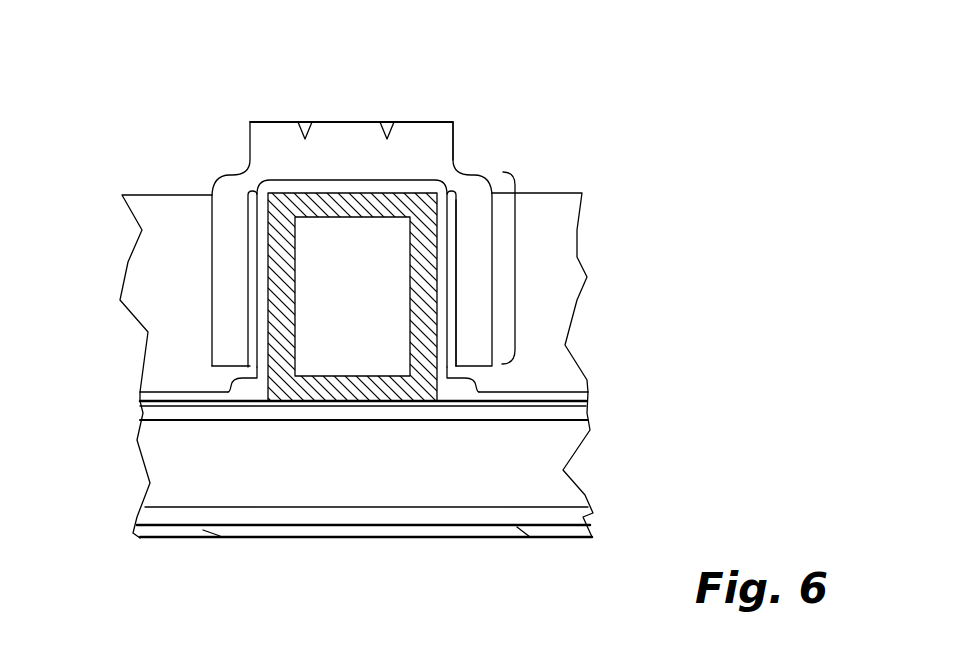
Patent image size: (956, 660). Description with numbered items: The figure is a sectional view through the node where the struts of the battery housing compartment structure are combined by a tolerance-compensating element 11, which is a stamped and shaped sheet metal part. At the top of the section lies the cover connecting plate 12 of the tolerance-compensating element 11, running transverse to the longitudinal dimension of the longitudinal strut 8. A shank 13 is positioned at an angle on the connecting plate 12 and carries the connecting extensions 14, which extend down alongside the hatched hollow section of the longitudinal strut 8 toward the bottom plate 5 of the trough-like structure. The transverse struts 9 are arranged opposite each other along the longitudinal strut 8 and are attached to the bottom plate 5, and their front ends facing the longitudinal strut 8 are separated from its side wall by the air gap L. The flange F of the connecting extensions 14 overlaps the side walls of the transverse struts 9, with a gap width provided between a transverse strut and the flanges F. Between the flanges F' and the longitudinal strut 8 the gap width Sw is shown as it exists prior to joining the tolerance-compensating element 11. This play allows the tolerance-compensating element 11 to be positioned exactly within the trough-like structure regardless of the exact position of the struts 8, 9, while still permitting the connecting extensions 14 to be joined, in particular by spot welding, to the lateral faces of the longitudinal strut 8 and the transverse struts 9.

The tolerance-compensating element 11 is at (235, 125).
The cover connecting plate 12 is at (413, 121).
The shank 13 is at (360, 164).
The longitudinal strut 8 is at (305, 192).
The transverse strut 9 is at (176, 306).
The connecting extension 14 is at (527, 248).
The bottom plate 5 is at (546, 395).
The air gap L is at (443, 203).
The flange F is at (369, 231).
The flange F' is at (487, 342).
The gap width Sw is at (441, 360).